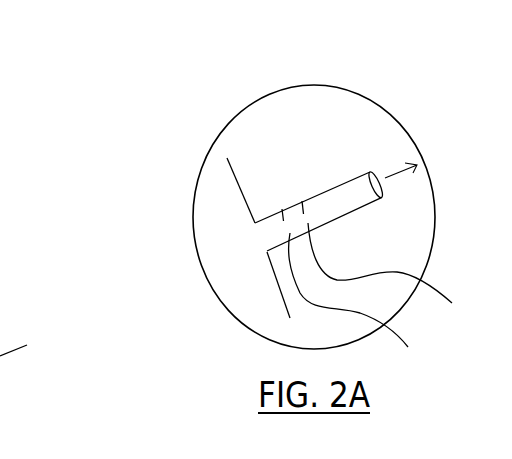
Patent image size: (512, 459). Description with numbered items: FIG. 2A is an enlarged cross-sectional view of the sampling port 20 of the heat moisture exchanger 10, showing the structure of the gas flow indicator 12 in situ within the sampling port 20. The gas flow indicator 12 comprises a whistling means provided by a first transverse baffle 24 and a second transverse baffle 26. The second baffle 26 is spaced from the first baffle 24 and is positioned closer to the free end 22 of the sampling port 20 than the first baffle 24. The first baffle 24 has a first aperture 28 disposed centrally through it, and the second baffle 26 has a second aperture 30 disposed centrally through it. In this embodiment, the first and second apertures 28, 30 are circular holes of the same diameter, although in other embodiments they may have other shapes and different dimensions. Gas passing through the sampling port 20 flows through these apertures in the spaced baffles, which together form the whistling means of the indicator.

The heat moisture exchanger 10 is at (220, 186).
The gas flow indicator 12 is at (282, 200).
The sampling port 20 is at (347, 205).
The free end 22 is at (383, 169).
The first transverse baffle 24 is at (344, 305).
The second transverse baffle 26 is at (389, 277).
The first aperture 28 is at (284, 228).
The second aperture 30 is at (312, 213).